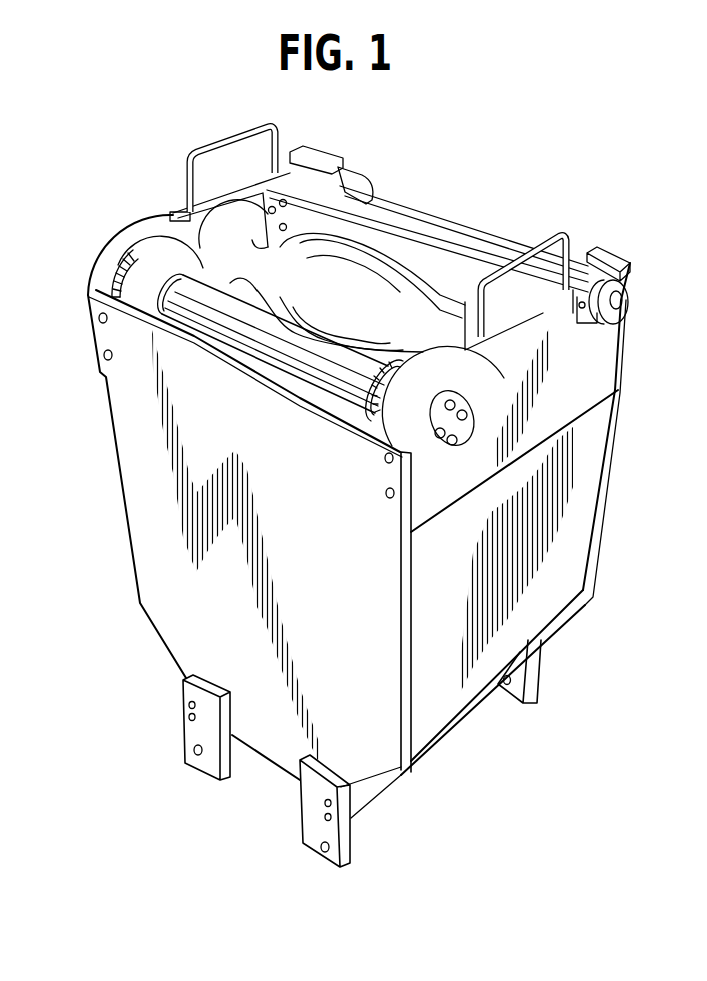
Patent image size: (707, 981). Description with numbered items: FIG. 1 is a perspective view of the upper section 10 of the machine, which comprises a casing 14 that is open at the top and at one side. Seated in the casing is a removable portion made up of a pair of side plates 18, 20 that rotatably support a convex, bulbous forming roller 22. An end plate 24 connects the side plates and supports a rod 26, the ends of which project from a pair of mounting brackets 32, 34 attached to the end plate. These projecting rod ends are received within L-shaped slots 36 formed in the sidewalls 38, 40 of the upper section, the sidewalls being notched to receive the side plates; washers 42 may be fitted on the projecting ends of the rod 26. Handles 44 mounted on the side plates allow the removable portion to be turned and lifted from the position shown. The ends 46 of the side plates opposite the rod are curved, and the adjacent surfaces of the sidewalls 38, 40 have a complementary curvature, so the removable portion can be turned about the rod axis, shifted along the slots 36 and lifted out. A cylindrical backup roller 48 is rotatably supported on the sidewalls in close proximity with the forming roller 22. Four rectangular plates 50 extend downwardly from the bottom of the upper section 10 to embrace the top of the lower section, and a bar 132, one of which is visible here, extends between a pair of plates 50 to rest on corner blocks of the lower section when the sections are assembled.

The upper section 10 is at (652, 458).
The casing 14 is at (136, 485).
The side plate 18 is at (553, 290).
The side plate 20 is at (177, 207).
The forming roller 22 is at (359, 316).
The end plate 24 is at (337, 228).
The rod 26 is at (430, 228).
The mounting bracket 32 is at (600, 253).
The mounting bracket 34 is at (352, 186).
The L-shaped slot 36 is at (290, 158).
The sidewall 38 is at (611, 377).
The sidewall 40 is at (123, 230).
The washer 42 is at (628, 294).
The handle 44 is at (217, 152).
The curved end of side plate 46 is at (697, 657).
The cylindrical backup roller 48 is at (327, 380).
The rectangular plate 50 is at (193, 733).
The bar 132 is at (445, 725).